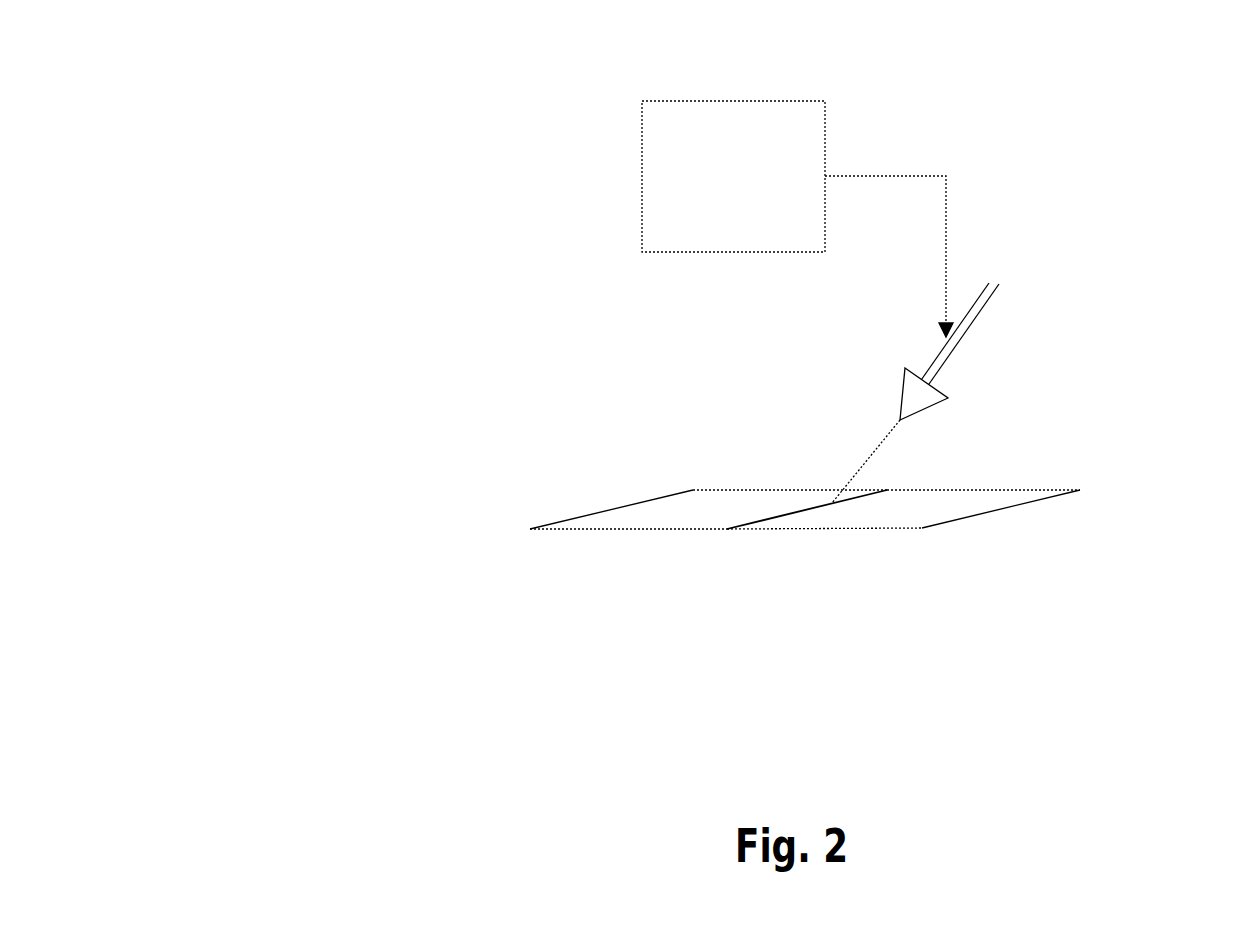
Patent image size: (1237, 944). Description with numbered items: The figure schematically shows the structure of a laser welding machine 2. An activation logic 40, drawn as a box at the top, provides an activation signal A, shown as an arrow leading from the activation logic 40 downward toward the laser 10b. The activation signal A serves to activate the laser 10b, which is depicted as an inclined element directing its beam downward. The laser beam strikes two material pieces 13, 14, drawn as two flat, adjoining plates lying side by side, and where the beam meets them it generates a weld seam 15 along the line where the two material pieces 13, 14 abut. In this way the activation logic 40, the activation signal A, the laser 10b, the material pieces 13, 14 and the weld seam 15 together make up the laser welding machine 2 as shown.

The laser welding machine 2 is at (322, 100).
The activation logic 40 is at (625, 110).
The activation signal A is at (967, 184).
The laser 10b is at (988, 323).
The material piece 13 is at (600, 498).
The material piece 14 is at (1083, 492).
The weld seam 15 is at (768, 523).